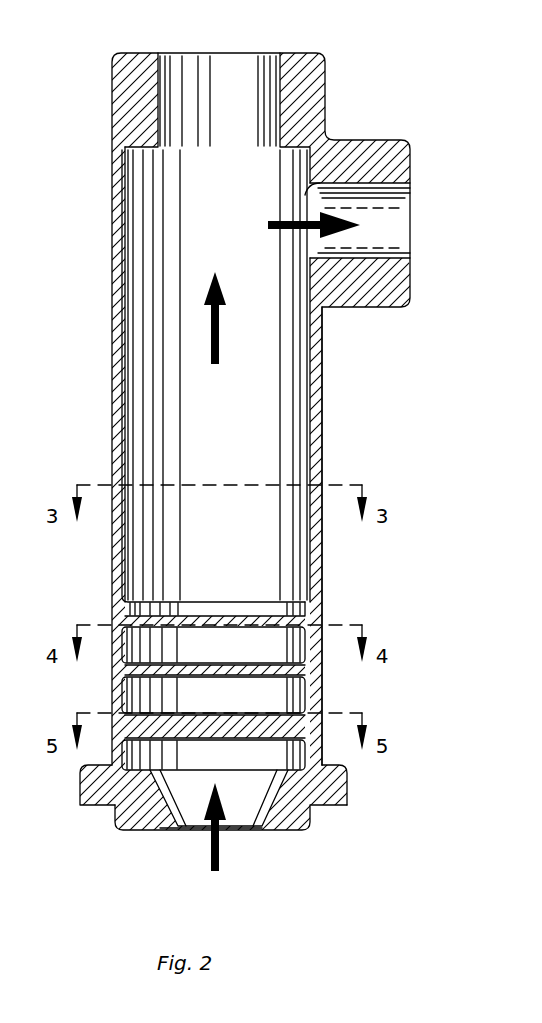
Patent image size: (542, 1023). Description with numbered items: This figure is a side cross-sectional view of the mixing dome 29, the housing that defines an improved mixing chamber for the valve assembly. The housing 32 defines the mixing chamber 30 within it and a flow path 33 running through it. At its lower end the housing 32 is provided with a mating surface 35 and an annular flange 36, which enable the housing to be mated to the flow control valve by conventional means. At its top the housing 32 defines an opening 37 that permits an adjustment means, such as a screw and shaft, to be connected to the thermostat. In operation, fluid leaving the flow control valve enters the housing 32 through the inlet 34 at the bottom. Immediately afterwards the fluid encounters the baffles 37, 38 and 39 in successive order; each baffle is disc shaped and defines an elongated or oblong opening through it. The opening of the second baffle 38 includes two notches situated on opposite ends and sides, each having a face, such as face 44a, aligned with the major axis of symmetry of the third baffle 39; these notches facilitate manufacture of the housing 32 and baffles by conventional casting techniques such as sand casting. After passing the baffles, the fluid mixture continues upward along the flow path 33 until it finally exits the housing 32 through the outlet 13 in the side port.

The outlet 13 is at (408, 200).
The mixing dome 29 is at (352, 362).
The mixing chamber 30 is at (202, 435).
The housing 32 is at (322, 465).
The flow path 33 is at (280, 218).
The inlet 34 is at (262, 832).
The mating surface 35 is at (306, 830).
The annular flange 36 is at (335, 810).
The opening 37 is at (160, 77).
The baffle 38 is at (210, 678).
The baffle 39 is at (190, 598).
The face 44a is at (157, 672).